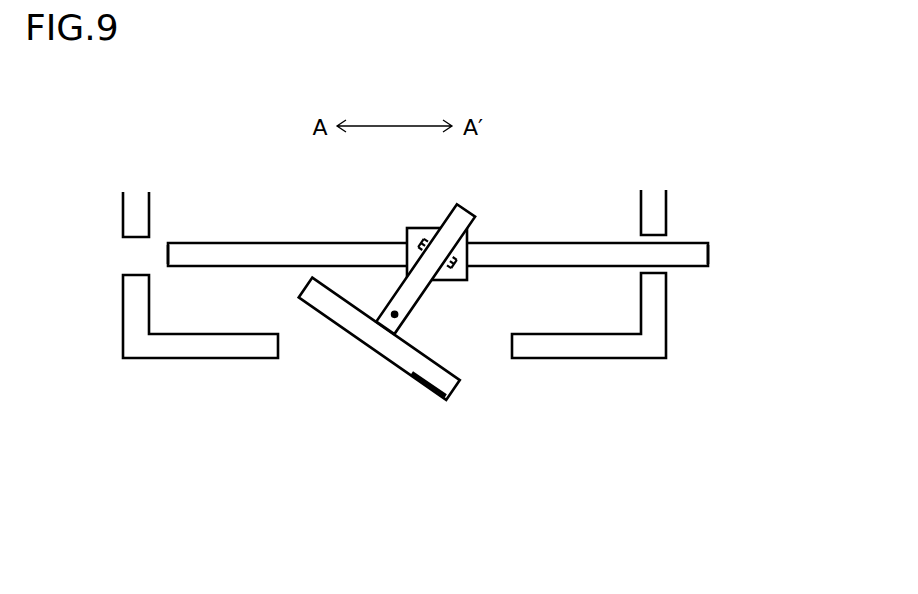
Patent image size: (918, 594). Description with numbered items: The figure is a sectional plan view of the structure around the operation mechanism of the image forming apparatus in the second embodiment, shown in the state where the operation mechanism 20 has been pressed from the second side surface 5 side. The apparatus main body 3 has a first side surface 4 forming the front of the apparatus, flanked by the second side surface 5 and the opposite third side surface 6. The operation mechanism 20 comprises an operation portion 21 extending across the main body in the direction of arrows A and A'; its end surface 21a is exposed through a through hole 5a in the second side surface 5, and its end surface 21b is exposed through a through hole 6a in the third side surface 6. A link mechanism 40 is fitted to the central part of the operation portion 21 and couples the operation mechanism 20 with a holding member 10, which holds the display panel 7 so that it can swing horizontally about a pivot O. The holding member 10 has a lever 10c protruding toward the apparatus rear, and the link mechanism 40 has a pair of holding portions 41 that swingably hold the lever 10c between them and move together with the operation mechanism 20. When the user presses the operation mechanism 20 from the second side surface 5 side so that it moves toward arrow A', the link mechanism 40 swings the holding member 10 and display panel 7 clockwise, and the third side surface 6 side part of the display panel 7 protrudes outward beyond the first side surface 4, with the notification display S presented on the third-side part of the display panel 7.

The apparatus main body 3 is at (622, 282).
The first side surface 4 is at (583, 347).
The second side surface 5 is at (135, 316).
The through hole 5a is at (135, 251).
The third side surface 6 is at (618, 351).
The through hole 6a is at (653, 238).
The display panel 7 is at (383, 350).
The holding member 10 is at (409, 374).
The lever 10c is at (412, 286).
The operation mechanism 20 is at (462, 238).
The operation portion 21 is at (531, 256).
The end surface 21a is at (168, 254).
The end surface 21b is at (708, 255).
The link mechanism 40 is at (415, 221).
The holding portions 41 is at (418, 245).
The pivot O is at (394, 315).
The notification display S is at (423, 392).